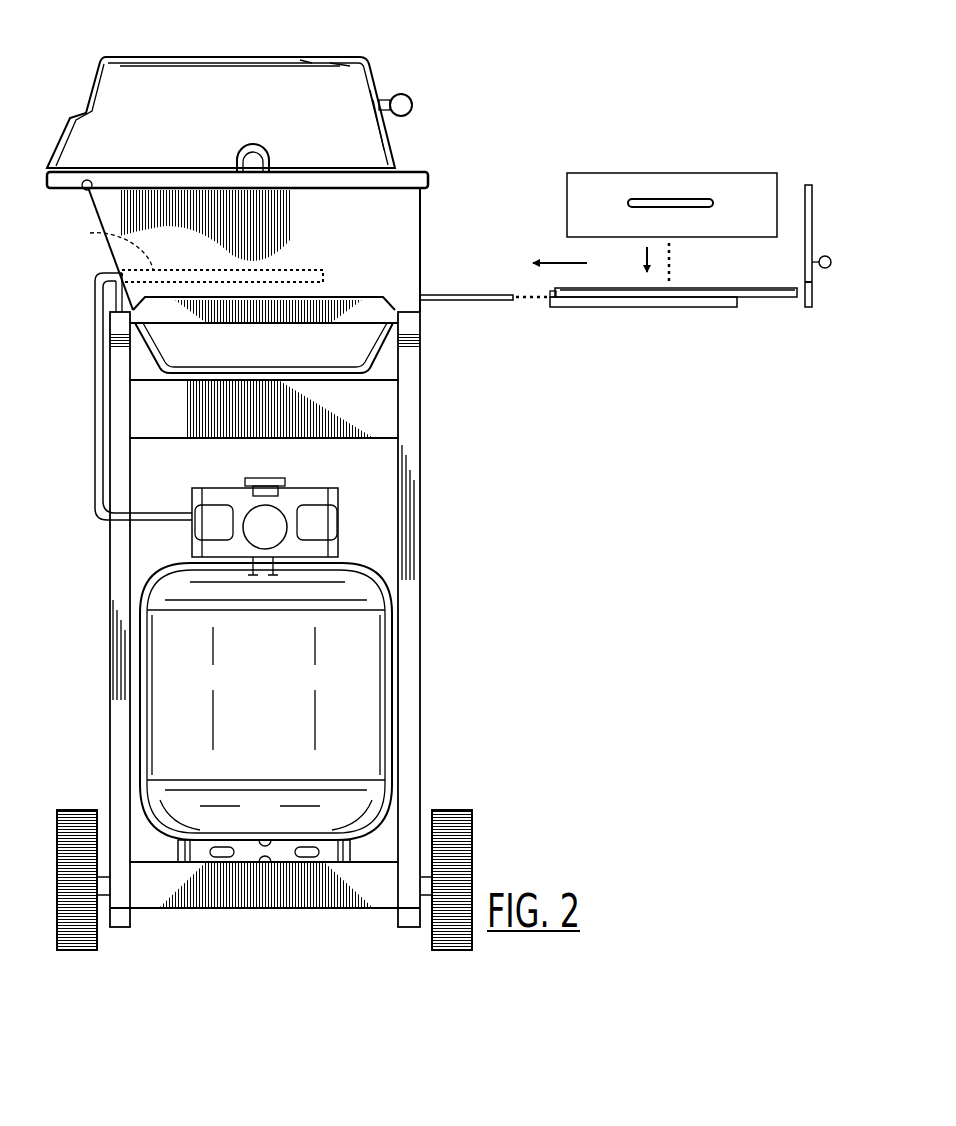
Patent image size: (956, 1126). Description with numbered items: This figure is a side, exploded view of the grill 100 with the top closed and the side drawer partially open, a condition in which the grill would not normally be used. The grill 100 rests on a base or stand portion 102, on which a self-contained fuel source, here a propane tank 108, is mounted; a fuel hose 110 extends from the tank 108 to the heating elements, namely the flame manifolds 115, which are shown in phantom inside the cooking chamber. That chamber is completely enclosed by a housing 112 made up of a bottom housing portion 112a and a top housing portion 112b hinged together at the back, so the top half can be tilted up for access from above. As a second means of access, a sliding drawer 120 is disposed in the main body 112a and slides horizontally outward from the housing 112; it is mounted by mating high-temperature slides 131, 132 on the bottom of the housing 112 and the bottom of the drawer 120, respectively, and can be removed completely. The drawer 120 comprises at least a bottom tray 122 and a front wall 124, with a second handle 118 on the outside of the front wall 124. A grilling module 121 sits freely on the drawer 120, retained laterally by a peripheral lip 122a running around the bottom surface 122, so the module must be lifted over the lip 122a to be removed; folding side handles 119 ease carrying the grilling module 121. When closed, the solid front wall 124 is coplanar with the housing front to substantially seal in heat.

The grill 100 is at (439, 49).
The base or stand portion 102 is at (439, 516).
The propane tank 108 is at (370, 688).
The fuel hose 110 is at (158, 517).
The housing 112 is at (415, 124).
The bottom housing portion 112a is at (410, 268).
The top housing portion 112b is at (237, 88).
The flame manifolds 115 is at (105, 245).
The second handle 118 is at (826, 256).
The folding side handles 119 is at (668, 200).
The sliding drawer 120 is at (813, 295).
The grilling module 121 is at (750, 181).
The bottom tray 122 is at (770, 300).
The peripheral lip 122a is at (693, 290).
The front wall 124 is at (812, 283).
The high-temperature slide 131 is at (455, 312).
The high-temperature slide 132 is at (620, 307).